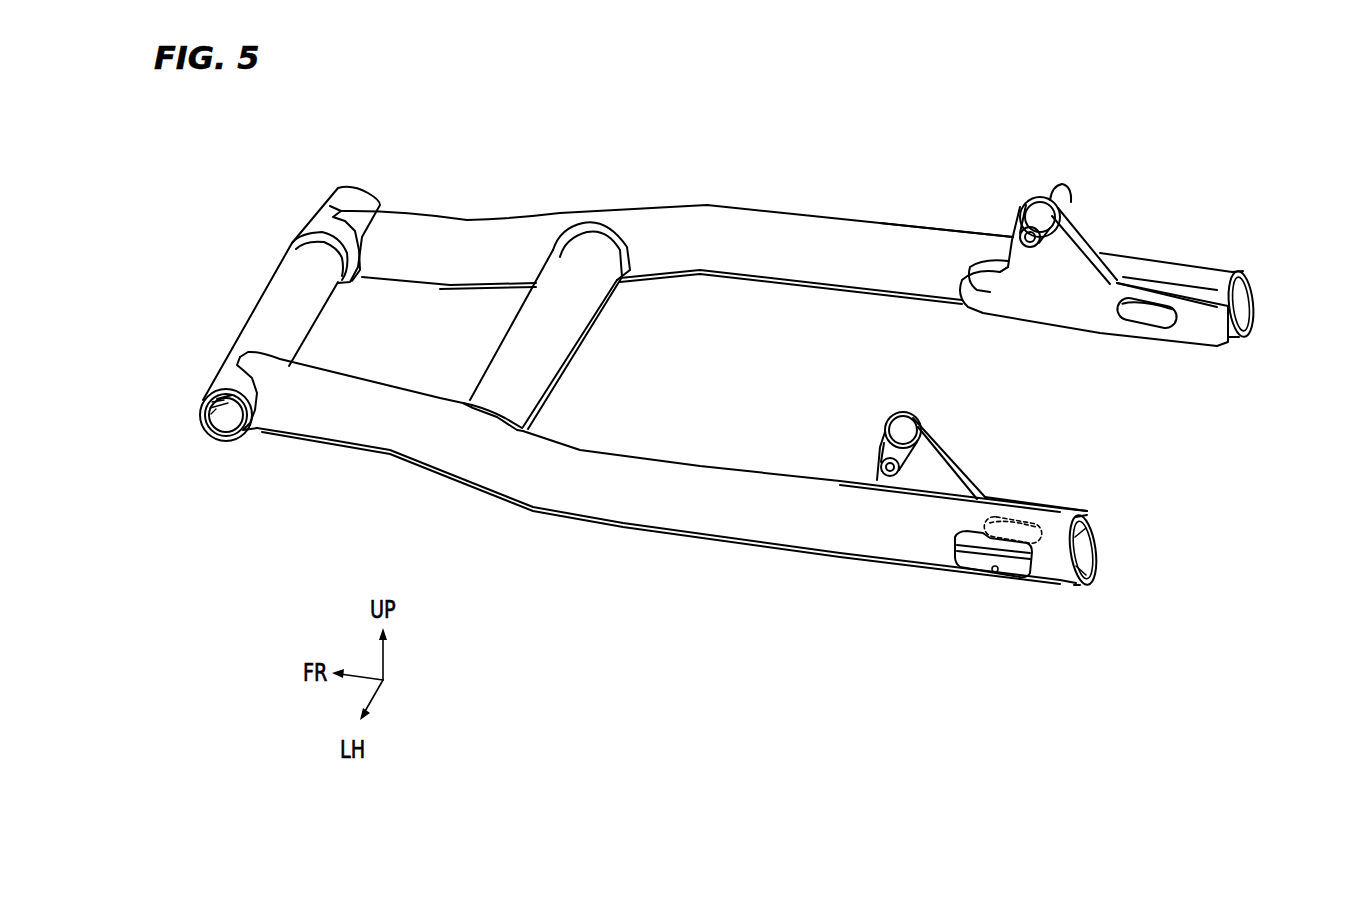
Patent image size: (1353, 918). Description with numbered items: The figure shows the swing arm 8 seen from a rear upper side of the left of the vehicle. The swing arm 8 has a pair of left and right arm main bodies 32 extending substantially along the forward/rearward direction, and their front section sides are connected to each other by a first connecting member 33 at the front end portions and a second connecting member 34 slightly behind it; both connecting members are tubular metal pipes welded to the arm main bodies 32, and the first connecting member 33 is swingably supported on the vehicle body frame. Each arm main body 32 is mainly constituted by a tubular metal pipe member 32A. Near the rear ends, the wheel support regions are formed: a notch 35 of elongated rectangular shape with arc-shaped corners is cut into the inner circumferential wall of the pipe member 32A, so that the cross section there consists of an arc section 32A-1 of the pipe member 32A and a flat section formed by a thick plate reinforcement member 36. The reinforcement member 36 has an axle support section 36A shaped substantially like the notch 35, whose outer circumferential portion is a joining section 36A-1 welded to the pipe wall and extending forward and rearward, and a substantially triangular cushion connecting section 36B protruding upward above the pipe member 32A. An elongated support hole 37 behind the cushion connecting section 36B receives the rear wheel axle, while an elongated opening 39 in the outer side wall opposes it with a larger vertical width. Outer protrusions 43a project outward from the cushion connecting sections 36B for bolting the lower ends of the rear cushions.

The swing arm 8 is at (812, 180).
The arm main body 32 is at (720, 208).
The pipe member 32A is at (906, 228).
The arc section 32A-1 is at (1218, 267).
The first connecting member 33 is at (268, 312).
The second connecting member 34 is at (512, 320).
The notch 35 is at (1251, 322).
The reinforcement member 36 is at (1116, 273).
The axle support section 36A is at (1186, 344).
The joining section 36A-1 is at (980, 266).
The cushion connecting section 36B is at (1086, 232).
The support hole 37 is at (1146, 322).
The opening 39 is at (993, 574).
The outer protrusion 43a is at (1062, 192).